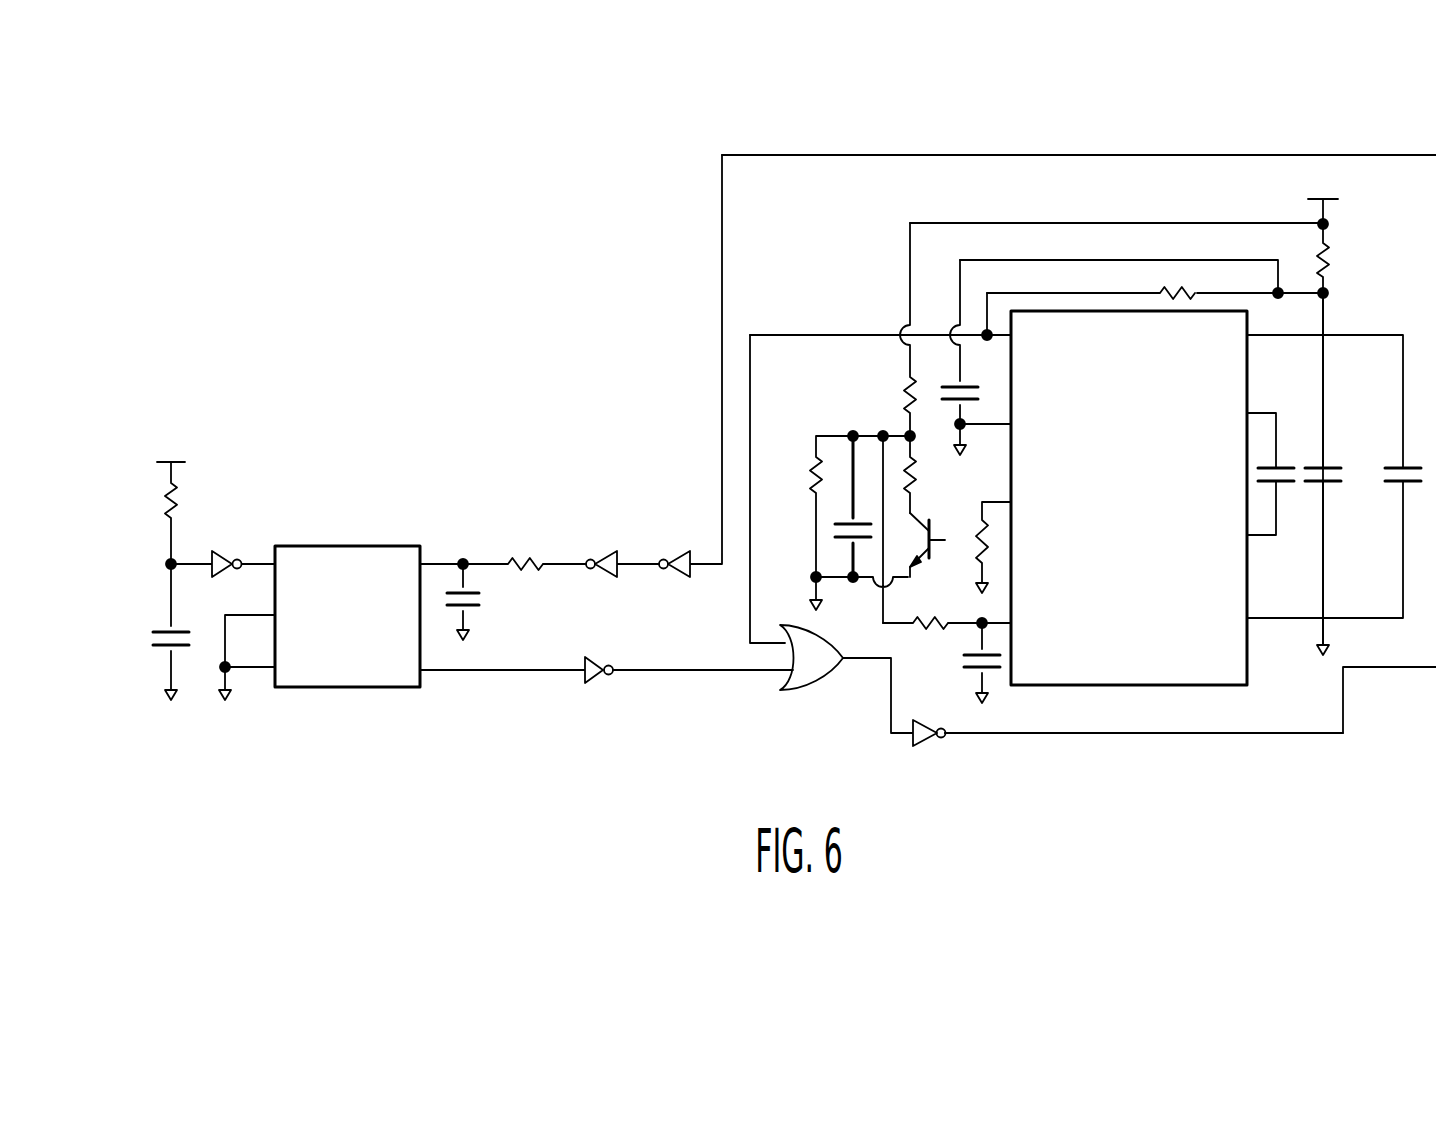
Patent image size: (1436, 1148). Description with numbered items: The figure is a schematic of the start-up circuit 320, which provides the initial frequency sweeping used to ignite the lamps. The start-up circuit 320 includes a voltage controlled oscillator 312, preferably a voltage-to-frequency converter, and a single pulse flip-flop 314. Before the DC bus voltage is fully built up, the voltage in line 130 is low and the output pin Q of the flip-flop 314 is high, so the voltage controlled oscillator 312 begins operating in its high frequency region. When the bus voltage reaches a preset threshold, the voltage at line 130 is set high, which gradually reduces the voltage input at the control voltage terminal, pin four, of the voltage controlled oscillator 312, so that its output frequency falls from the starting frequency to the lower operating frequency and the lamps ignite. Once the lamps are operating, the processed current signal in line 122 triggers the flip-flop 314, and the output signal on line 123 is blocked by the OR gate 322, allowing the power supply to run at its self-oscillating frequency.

The line 122 is at (1115, 155).
The line 123 is at (1127, 733).
The line 130 is at (945, 540).
The voltage controlled oscillator 312 is at (1122, 685).
The single pulse flip-flop 314 is at (358, 687).
The start-up circuit 320 is at (443, 295).
The OR gate 322 is at (810, 690).